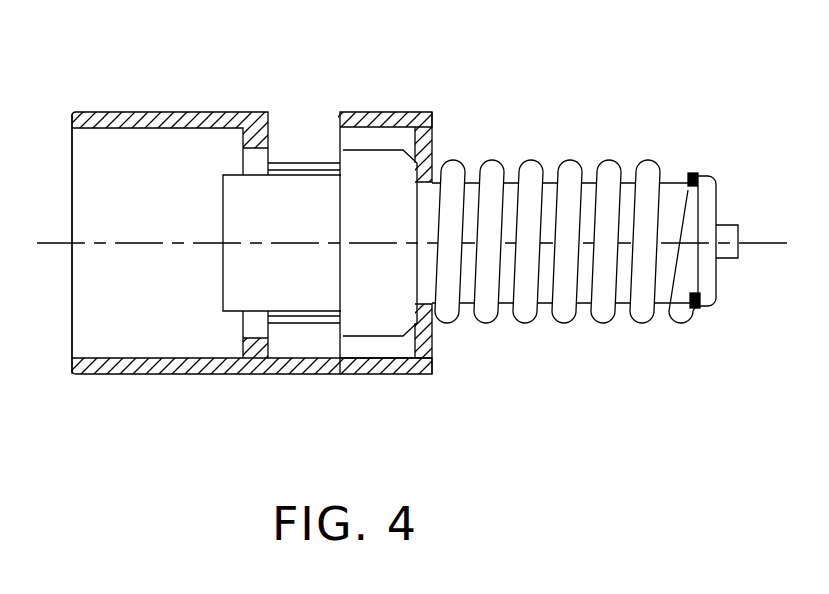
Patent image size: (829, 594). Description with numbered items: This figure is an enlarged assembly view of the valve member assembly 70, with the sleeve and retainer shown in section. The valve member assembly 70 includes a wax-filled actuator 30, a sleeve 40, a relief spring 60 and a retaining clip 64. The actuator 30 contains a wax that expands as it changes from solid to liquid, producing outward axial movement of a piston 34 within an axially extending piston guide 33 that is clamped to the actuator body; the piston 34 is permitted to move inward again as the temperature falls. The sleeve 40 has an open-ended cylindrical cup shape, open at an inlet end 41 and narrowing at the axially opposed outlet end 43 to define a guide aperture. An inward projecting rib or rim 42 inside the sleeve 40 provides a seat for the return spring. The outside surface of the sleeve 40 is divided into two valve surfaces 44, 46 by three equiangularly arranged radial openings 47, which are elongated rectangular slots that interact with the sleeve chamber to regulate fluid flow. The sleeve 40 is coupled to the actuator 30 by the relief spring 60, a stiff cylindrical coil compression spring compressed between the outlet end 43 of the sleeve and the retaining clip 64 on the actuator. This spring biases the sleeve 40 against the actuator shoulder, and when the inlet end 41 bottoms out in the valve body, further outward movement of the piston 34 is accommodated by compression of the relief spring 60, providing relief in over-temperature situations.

The actuator 30 is at (294, 216).
The piston guide 33 is at (551, 197).
The piston 34 is at (726, 236).
The sleeve 40 is at (243, 376).
The inlet end 41 is at (70, 118).
The rib or rim 42 is at (247, 351).
The outlet end 43 is at (433, 134).
The valve surface 44 is at (132, 112).
The valve surface 46 is at (381, 112).
The radial openings 47 is at (302, 145).
The relief spring 60 is at (562, 326).
The retaining clip 64 is at (698, 311).
The valve member assembly 70 is at (455, 348).